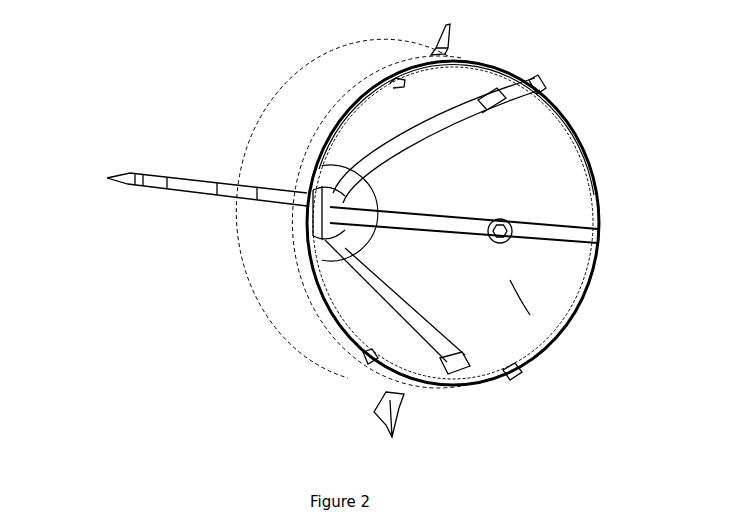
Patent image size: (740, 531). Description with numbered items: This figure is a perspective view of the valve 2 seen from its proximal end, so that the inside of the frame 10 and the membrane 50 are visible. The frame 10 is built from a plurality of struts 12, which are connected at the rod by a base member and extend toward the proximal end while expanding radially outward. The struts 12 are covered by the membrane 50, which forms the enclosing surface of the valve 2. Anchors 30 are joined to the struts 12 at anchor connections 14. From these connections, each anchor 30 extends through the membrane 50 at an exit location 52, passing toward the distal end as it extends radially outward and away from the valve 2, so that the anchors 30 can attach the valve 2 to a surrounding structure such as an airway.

The valve 2 is at (354, 230).
The frame 10 is at (323, 260).
The struts 12 is at (407, 137).
The anchor connections 14 is at (513, 85).
The anchor 30 is at (505, 102).
The membrane 50 is at (510, 280).
The exit location 52 is at (513, 118).